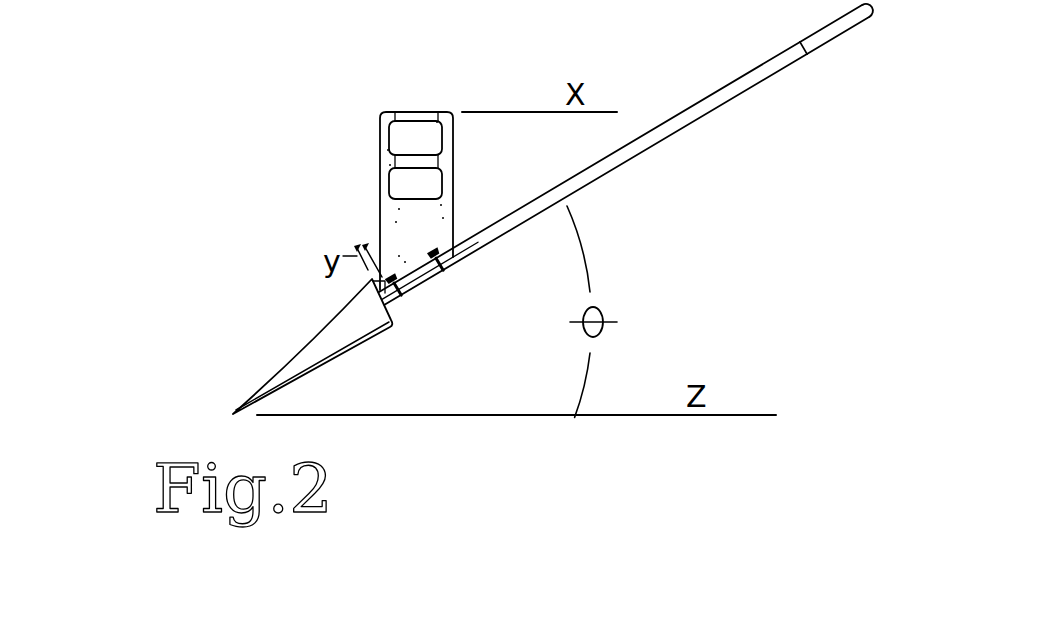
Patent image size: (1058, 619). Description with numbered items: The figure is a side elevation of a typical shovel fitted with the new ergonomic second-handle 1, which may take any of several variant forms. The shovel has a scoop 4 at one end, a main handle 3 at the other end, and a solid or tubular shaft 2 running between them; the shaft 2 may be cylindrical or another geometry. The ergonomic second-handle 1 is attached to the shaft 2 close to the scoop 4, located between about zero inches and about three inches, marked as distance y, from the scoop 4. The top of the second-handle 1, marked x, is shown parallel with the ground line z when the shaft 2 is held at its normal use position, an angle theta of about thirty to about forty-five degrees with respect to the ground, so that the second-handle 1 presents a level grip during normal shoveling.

The ergonomic second-handle 1 is at (373, 168).
The shovel shaft 2 is at (639, 147).
The main handle 3 is at (850, 33).
The scoop 4 is at (293, 368).